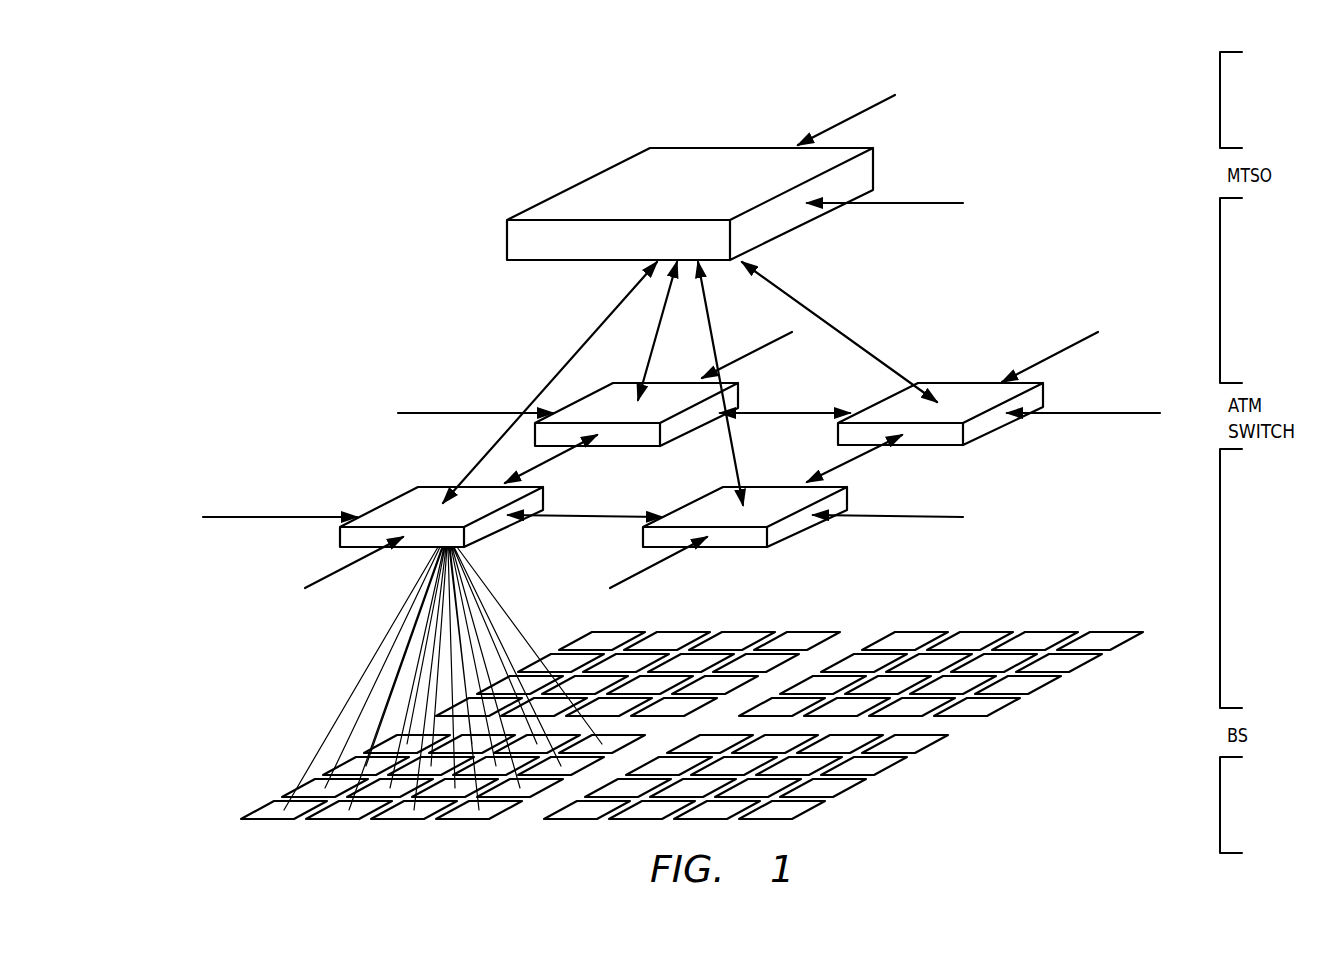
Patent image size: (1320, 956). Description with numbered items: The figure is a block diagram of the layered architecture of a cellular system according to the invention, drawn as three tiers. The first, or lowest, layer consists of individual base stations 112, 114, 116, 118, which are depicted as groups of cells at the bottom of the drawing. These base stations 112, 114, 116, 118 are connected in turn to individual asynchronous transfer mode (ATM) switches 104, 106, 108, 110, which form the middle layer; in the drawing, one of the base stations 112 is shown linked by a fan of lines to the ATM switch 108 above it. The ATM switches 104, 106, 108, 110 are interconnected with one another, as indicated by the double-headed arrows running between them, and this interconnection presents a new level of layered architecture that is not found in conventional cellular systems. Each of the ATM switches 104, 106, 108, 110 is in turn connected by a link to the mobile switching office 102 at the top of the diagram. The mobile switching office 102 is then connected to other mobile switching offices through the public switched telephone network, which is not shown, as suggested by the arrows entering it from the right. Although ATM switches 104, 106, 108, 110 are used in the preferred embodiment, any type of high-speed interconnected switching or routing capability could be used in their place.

The mobile switching office 102 is at (603, 183).
The ATM switch 104 is at (633, 438).
The ATM switch 106 is at (968, 390).
The ATM switch 108 is at (397, 505).
The ATM switch 110 is at (772, 492).
The base station 112 is at (292, 765).
The base station 114 is at (880, 780).
The base station 116 is at (1025, 620).
The base station 118 is at (722, 620).